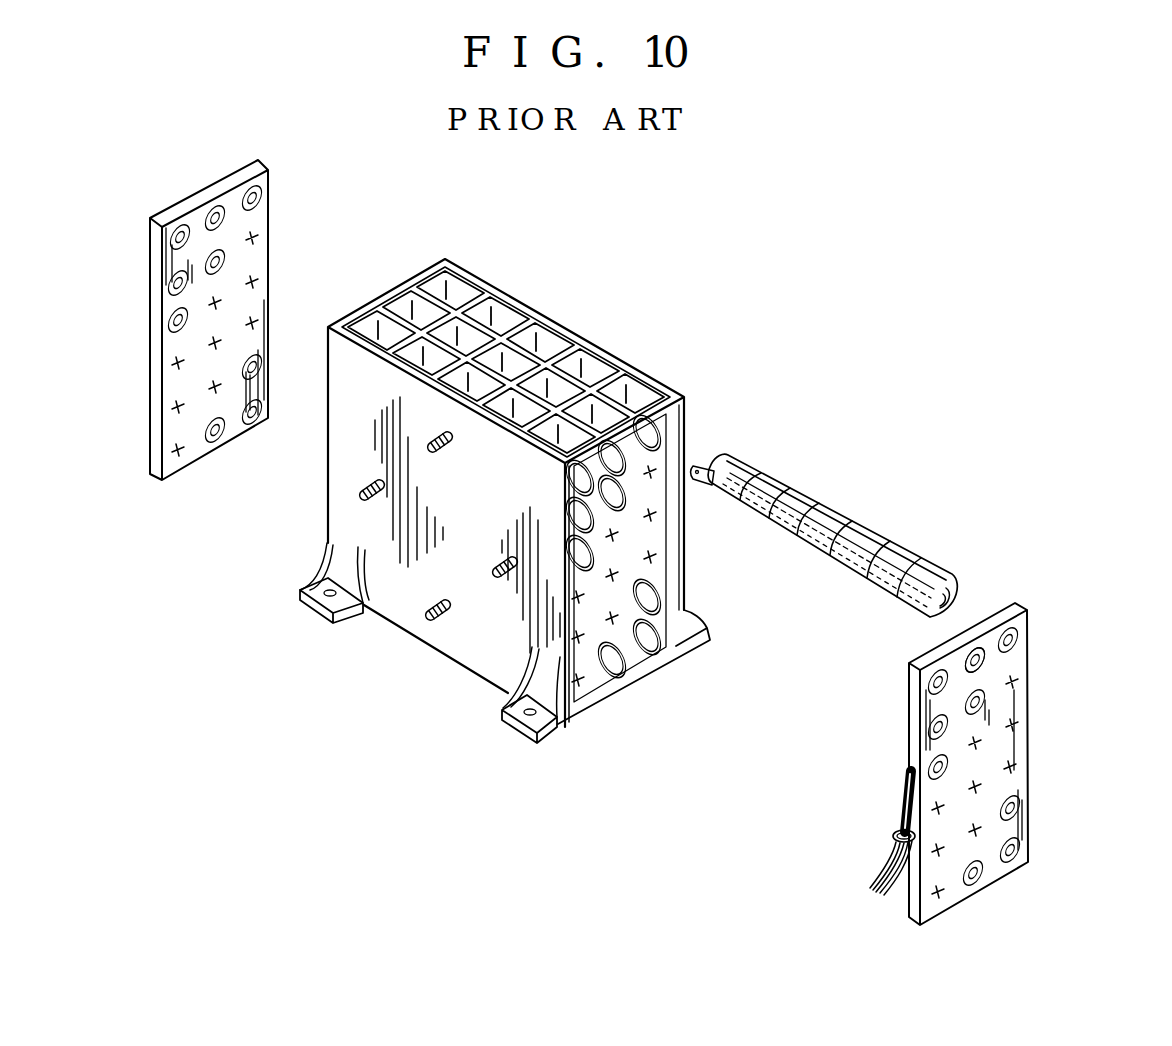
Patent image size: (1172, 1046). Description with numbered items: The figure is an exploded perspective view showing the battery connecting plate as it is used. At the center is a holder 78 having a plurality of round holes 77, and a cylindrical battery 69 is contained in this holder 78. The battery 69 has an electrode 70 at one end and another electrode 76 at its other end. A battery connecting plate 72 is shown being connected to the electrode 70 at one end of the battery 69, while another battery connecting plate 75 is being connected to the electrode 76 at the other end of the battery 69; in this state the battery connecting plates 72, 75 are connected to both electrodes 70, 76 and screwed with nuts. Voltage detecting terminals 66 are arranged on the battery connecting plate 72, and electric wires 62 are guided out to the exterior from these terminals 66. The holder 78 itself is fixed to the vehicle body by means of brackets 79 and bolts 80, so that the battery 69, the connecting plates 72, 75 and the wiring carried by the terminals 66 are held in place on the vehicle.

The electric wires 62 is at (888, 875).
The voltage detecting terminals 66 is at (985, 665).
The cylindrical battery 69 is at (852, 528).
The electrode 70 is at (952, 600).
The battery connecting plate 72 is at (1030, 743).
The battery connecting plate 75 is at (271, 227).
The electrode 76 is at (712, 466).
The round holes 77 is at (652, 598).
The holder 78 is at (540, 313).
The brackets 79 is at (518, 728).
The bolts 80 is at (427, 618).